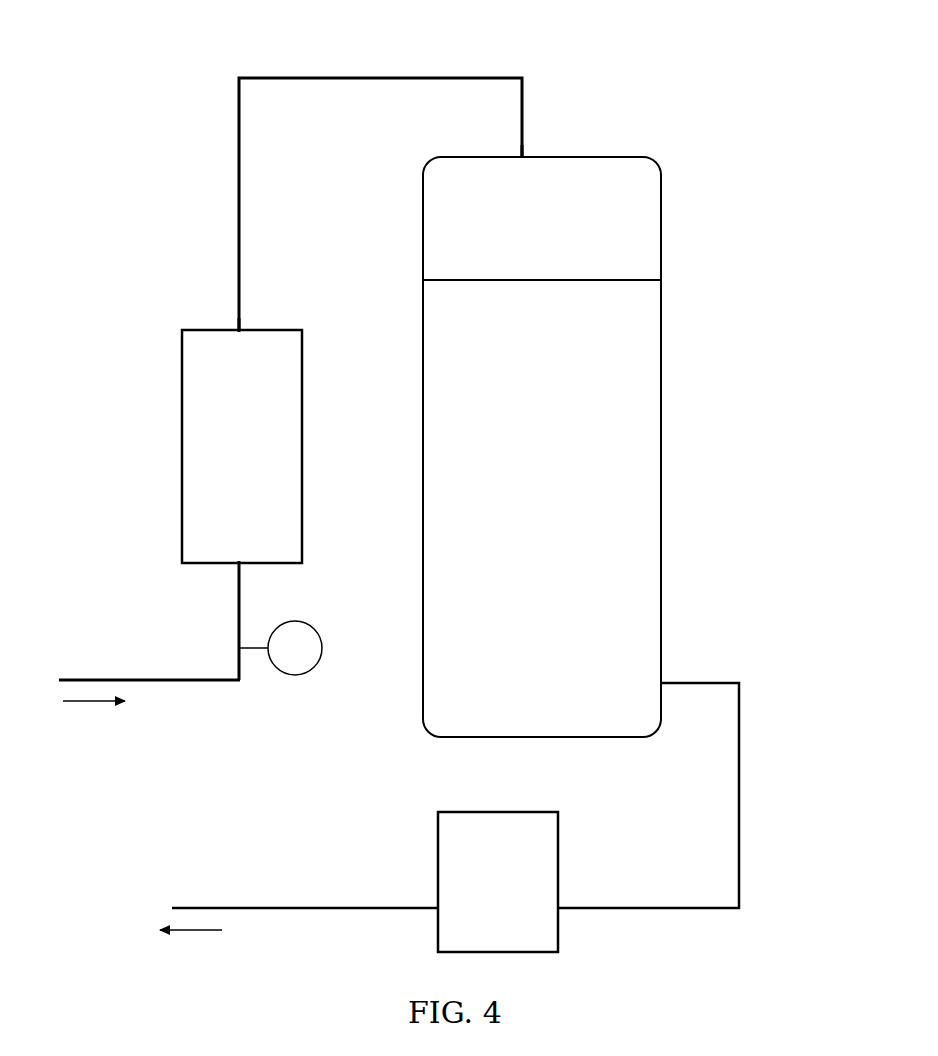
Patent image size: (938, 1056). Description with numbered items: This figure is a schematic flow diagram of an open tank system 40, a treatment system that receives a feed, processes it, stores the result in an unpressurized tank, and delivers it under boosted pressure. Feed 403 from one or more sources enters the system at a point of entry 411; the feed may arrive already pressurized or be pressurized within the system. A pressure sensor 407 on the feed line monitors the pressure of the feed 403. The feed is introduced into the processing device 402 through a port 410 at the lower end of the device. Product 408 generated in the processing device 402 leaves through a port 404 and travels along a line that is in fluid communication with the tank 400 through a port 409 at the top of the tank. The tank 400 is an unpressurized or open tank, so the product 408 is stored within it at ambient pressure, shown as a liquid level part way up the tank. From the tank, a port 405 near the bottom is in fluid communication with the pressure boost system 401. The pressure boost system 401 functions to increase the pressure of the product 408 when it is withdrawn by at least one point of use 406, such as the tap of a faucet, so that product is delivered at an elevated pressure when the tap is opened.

The open tank system 40 is at (167, 218).
The tank 400 is at (636, 234).
The pressure boost system 401 is at (519, 911).
The processing device 402 is at (222, 451).
The feed 403 is at (128, 662).
The port 404 is at (235, 328).
The port 405 is at (670, 670).
The point of use 406 is at (267, 910).
The pressure sensor 407 is at (303, 677).
The product 408 is at (315, 73).
The port 409 is at (537, 152).
The port 410 is at (232, 568).
The point of entry 411 is at (66, 703).